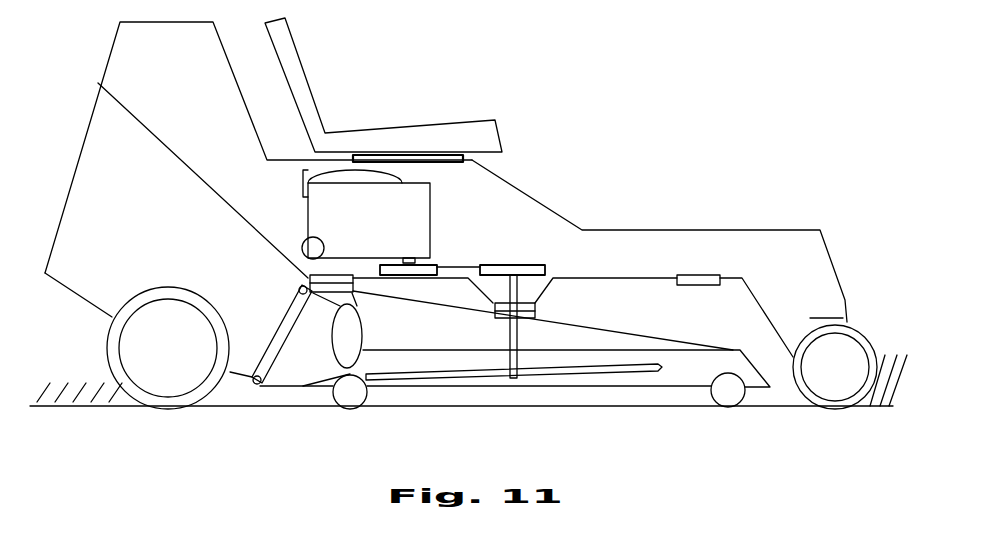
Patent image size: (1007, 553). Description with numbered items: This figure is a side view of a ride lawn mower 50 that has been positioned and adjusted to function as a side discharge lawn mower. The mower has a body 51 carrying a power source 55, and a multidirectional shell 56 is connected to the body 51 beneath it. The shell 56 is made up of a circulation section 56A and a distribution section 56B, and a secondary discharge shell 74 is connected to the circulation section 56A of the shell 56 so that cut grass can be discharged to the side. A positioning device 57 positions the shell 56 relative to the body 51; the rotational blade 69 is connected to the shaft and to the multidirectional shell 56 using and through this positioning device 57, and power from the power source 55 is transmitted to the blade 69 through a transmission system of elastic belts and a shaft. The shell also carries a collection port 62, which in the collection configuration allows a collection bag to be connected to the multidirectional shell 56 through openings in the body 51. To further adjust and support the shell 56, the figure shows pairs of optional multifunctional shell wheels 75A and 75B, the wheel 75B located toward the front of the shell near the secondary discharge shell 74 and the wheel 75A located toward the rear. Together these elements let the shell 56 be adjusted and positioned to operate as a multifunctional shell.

The ride lawn mower 50 is at (698, 112).
The body 51 is at (530, 197).
The power source 55 is at (383, 207).
The multidirectional shell 56 is at (537, 388).
The circulation section 56A is at (389, 338).
The distribution section 56B is at (605, 347).
The positioning device 57 is at (540, 312).
The collection port 62 is at (278, 338).
The rotational blade 69 is at (607, 375).
The secondary discharge shell 74 is at (330, 340).
The multifunctional shell wheel 75A is at (727, 400).
The multifunctional shell wheel 75B is at (345, 397).